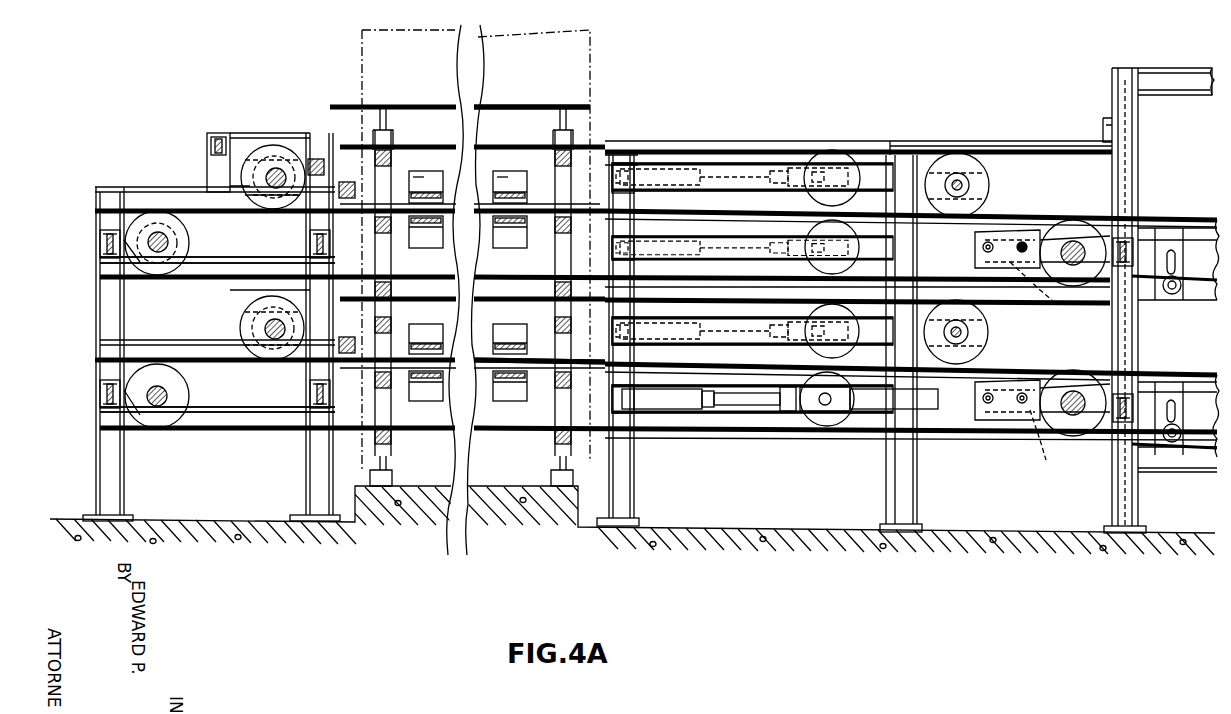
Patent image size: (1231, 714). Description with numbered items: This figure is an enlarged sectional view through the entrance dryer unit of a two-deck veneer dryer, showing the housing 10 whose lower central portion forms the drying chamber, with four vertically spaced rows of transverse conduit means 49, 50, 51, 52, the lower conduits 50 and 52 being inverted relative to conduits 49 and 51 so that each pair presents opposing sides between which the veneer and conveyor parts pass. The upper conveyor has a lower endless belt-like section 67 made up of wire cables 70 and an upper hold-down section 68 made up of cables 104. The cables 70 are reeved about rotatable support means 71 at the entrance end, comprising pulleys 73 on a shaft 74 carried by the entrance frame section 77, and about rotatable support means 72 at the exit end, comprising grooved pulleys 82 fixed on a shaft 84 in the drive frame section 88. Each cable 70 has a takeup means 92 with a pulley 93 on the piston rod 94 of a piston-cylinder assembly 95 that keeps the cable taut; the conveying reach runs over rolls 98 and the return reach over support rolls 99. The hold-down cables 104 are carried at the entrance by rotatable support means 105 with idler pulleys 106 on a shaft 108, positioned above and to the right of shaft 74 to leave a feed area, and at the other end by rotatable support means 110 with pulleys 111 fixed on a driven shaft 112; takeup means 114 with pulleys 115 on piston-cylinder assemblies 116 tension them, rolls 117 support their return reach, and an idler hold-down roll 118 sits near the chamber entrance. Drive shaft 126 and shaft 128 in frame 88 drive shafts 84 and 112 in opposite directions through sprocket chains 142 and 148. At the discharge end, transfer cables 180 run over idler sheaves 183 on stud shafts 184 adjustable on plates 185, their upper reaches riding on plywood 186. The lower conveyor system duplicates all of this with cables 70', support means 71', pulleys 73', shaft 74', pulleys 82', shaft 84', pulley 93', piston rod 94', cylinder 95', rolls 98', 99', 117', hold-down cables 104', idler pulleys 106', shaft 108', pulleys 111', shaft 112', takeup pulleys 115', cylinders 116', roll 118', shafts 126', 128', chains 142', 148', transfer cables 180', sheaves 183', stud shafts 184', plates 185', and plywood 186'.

The housing 10 is at (590, 80).
The conduit means 49 is at (456, 168).
The conduit means 50 is at (440, 244).
The conduit means 51 is at (430, 324).
The conduit means 52 is at (418, 396).
The lower endless belt-like section 67 is at (286, 222).
The upper endless belt-like section 68 is at (612, 140).
The wire cables 70 is at (399, 269).
The wire cables 70' is at (420, 412).
The rotatable support means 71 is at (136, 274).
The rotatable support means 71' is at (169, 390).
The rotatable support means 72 is at (1114, 212).
The pulleys 73 is at (157, 260).
The pulleys 73' is at (167, 413).
The shaft 74 is at (172, 243).
The shaft 74' is at (157, 413).
The entrance frame section 77 is at (212, 133).
The pulleys 82 is at (1073, 262).
The pulleys 82' is at (1073, 418).
The shaft 84 is at (1102, 232).
The shaft 84' is at (1089, 378).
The drive frame section 88 is at (904, 141).
The takeup means 92 is at (720, 268).
The pulley 93 is at (835, 260).
The pulley 93' is at (869, 413).
The piston rod 94 is at (752, 305).
The piston rod 94' is at (748, 423).
The piston-cylinder assembly 95 is at (752, 268).
The piston-cylinder assembly 95' is at (752, 419).
The rolls 98 is at (472, 297).
The rolls 98' is at (468, 393).
The support rolls 99 is at (473, 288).
The support rolls 99' is at (473, 446).
The cables 104 is at (656, 268).
The cables 104' is at (539, 347).
The rotatable support means 105 is at (300, 120).
The idler pulleys 106 is at (240, 159).
The idler pulleys 106' is at (253, 294).
The shaft 108 is at (338, 162).
The shaft 108' is at (250, 328).
The rotatable support means 110 is at (976, 151).
The pulleys 111 is at (991, 152).
The pulleys 111' is at (974, 324).
The driven shaft 112 is at (987, 182).
The driven shaft 112' is at (989, 332).
The takeup means 114 is at (732, 142).
The pulleys 115 is at (836, 154).
The pulleys 115' is at (802, 330).
The piston-cylinder assemblies 116 is at (663, 257).
The piston-cylinder assemblies 116' is at (657, 358).
The rolls 117 is at (473, 160).
The rolls 117' is at (473, 318).
The idler hold-down roll 118 is at (352, 185).
The idler hold-down roll 118' is at (352, 326).
The drive shaft 126 is at (969, 244).
The drive shaft 126' is at (964, 429).
The shaft 128 is at (1061, 233).
The shaft 128' is at (1012, 429).
The sprocket chain 142 is at (1038, 283).
The sprocket chain 142' is at (1047, 442).
The sprocket chain 148 is at (1014, 224).
The sprocket chain 148' is at (1025, 375).
The cables 180 is at (1178, 231).
The cables 180' is at (1178, 399).
The idler sheaves 183 is at (1191, 289).
The idler sheaves 183' is at (1177, 472).
The stud shafts 184 is at (1177, 278).
The stud shafts 184' is at (1180, 418).
The plates 185 is at (1193, 262).
The plates 185' is at (1195, 411).
The plywood 186 is at (1174, 233).
The plywood 186' is at (1177, 398).